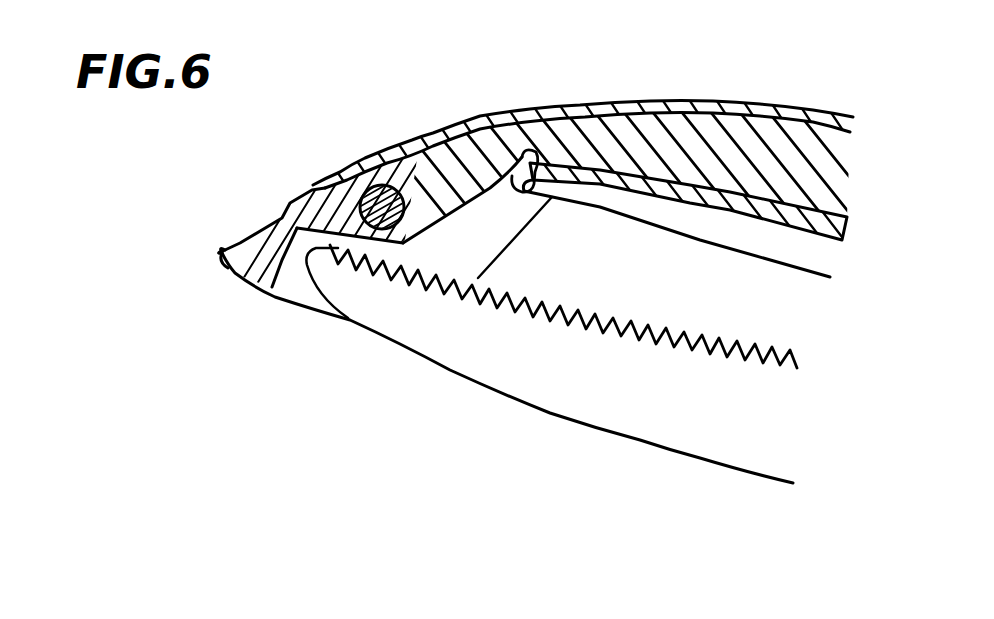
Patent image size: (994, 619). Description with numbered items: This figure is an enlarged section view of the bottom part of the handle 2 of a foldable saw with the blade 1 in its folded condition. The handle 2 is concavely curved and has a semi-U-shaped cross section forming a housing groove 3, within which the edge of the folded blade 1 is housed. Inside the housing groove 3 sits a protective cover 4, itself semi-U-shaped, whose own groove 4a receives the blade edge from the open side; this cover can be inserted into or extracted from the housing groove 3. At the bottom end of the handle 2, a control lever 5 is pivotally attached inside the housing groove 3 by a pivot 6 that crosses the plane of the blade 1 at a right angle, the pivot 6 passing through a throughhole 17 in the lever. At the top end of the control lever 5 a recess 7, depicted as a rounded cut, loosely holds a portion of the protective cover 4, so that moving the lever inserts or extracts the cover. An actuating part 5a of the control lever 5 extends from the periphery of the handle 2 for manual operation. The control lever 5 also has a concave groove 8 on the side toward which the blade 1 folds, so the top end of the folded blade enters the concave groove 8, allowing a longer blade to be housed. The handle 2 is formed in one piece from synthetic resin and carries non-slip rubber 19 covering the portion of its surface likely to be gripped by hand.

The blade 1 is at (658, 410).
The handle 2 is at (771, 172).
The housing groove 3 is at (633, 259).
The protective cover 4 is at (836, 235).
The groove 4a is at (810, 255).
The control lever 5 is at (315, 185).
The actuating part 5a is at (222, 247).
The pivot 6 is at (383, 185).
The recess 7 is at (512, 150).
The concave groove 8 is at (294, 283).
The throughhole 17 is at (378, 233).
The non-slip rubber 19 is at (624, 106).